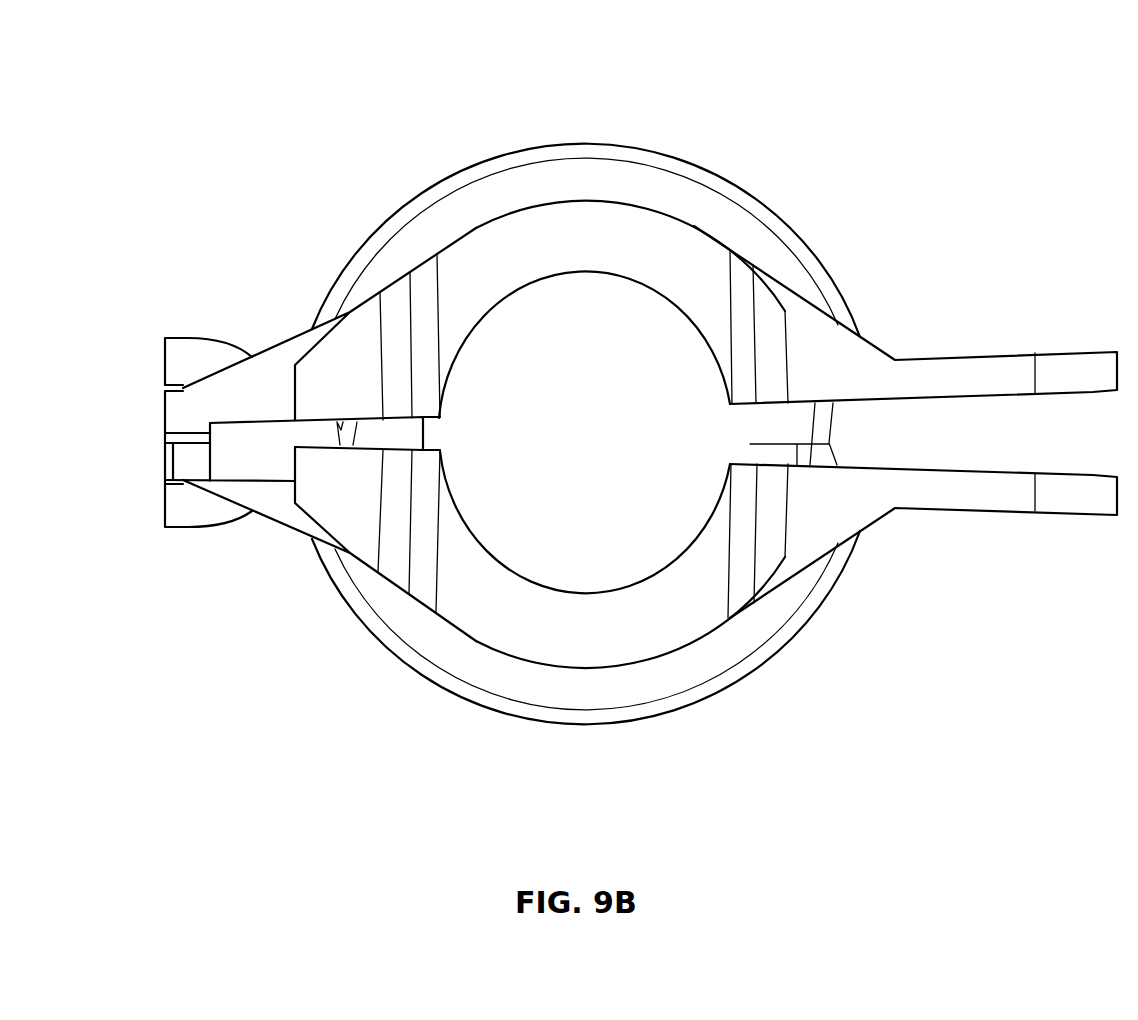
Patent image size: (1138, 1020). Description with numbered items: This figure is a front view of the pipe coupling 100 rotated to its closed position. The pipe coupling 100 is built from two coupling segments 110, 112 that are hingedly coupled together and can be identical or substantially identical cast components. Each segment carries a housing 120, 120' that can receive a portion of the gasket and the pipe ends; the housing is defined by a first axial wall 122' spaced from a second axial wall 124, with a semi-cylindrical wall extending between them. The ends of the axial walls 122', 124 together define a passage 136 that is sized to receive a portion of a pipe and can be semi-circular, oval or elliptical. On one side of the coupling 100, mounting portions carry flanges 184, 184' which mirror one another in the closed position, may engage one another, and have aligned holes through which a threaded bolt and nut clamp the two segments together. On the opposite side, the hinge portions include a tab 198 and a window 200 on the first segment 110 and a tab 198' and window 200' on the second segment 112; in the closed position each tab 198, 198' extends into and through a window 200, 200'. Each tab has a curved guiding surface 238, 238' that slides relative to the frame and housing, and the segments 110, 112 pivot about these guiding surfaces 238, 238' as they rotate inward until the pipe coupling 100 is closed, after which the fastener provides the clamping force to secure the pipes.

The pipe coupling 100 is at (935, 47).
The coupling segment 110 is at (426, 688).
The coupling segment 112 is at (551, 138).
The housing 120 is at (586, 668).
The housing 120' is at (624, 241).
The first axial wall 122' is at (584, 260).
The second axial wall 124 is at (648, 615).
The passage 136 is at (673, 512).
The flange 184 is at (934, 541).
The flange 184' is at (916, 315).
The tab 198 is at (206, 331).
The tab 198' is at (197, 536).
The window 200 is at (147, 463).
The window 200' is at (140, 414).
The guiding surface 238 is at (329, 324).
The guiding surface 238' is at (329, 544).